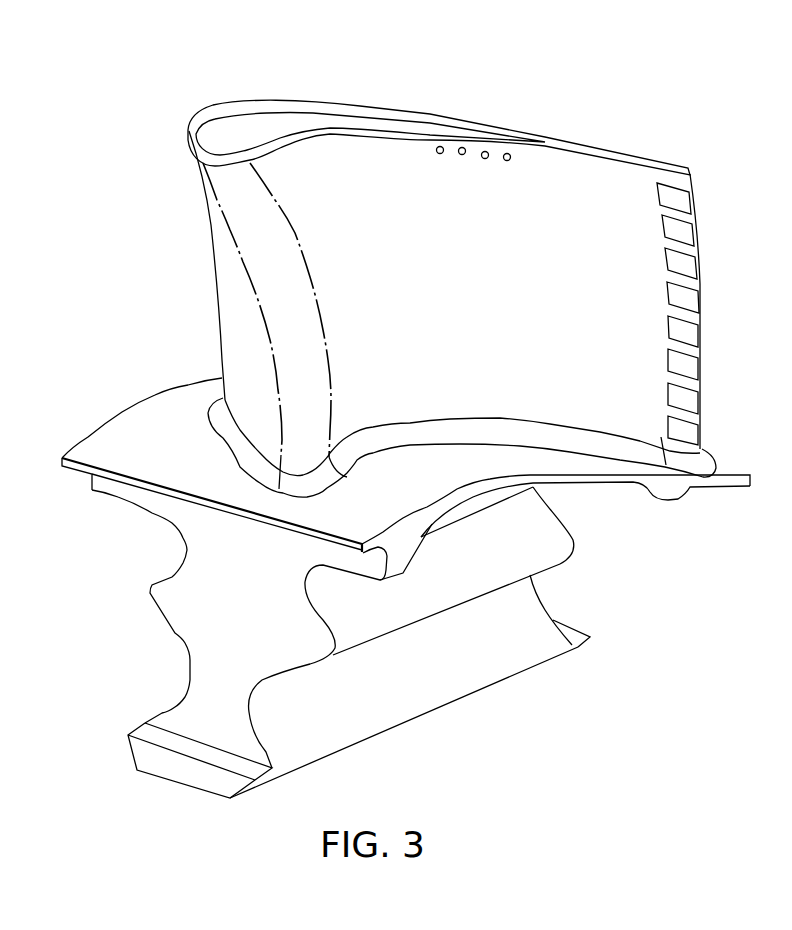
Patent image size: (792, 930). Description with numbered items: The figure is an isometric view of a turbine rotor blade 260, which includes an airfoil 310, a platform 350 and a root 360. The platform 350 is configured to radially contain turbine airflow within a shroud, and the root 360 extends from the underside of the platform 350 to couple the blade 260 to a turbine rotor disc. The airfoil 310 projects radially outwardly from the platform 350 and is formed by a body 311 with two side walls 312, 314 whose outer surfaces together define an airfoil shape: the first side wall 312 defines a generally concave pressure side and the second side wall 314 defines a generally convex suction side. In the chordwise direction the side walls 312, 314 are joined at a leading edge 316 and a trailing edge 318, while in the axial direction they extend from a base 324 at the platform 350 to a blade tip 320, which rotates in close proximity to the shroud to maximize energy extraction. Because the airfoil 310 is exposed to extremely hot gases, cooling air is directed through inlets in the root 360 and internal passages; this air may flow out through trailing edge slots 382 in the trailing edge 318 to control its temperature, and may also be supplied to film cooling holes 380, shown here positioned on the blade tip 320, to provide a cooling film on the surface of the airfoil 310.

The rotor blade 260 is at (661, 110).
The airfoil 310 is at (384, 148).
The body 311 is at (230, 273).
The first side wall 312 is at (490, 318).
The second side wall 314 is at (222, 312).
The leading edge 316 is at (230, 212).
The trailing edge 318 is at (702, 237).
The blade tip 320 is at (178, 128).
The base 324 is at (210, 421).
The platform 350 is at (421, 490).
The root 360 is at (207, 633).
The film cooling holes 380 is at (485, 160).
The trailing edge slots 382 is at (692, 336).